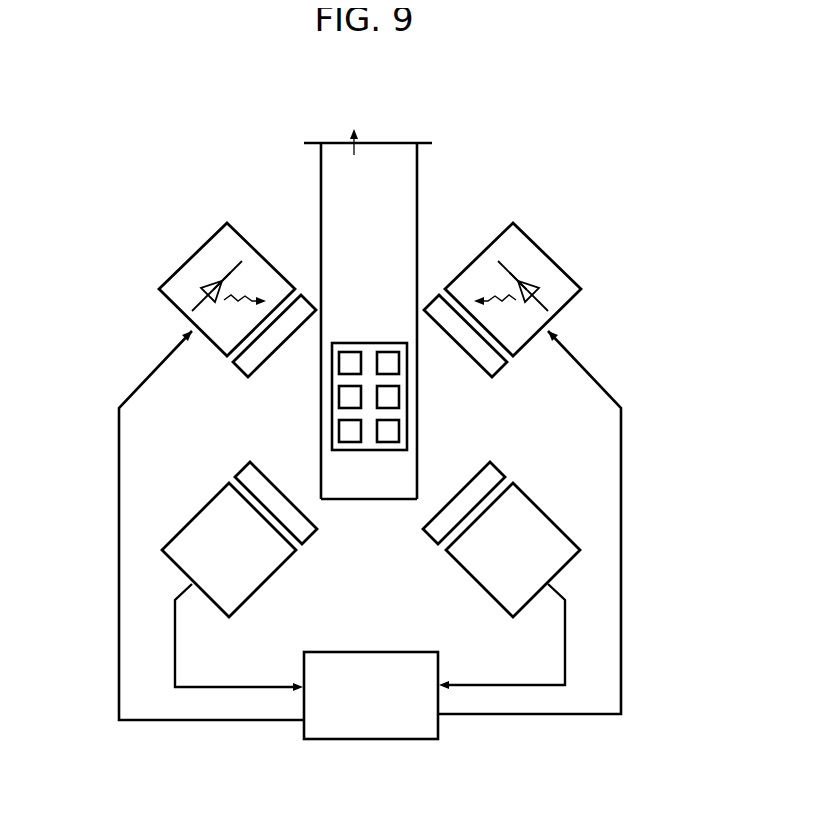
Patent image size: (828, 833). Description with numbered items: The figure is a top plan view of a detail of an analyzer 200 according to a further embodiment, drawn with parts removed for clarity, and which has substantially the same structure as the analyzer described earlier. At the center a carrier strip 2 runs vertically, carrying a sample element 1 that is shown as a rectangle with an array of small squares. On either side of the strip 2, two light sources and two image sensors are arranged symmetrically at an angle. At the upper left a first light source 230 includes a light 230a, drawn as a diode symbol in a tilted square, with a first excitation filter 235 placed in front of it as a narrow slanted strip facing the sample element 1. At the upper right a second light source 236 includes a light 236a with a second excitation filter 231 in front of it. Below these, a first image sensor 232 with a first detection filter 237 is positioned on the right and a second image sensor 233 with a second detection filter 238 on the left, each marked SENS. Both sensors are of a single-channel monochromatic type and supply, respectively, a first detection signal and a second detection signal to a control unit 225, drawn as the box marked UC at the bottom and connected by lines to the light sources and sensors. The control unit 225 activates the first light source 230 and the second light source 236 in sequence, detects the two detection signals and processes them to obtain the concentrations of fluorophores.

The electronic component / chip 1 is at (406, 404).
The carrier strip 2 is at (328, 153).
The analyzer 200 is at (644, 186).
The control unit 225 is at (372, 730).
The first light source 230 is at (130, 254).
The light 230a is at (212, 254).
The second excitation filter 231 is at (481, 362).
The first image sensor 232 is at (526, 513).
The second image sensor 233 is at (210, 511).
The first excitation filter 235 is at (305, 296).
The second light source 236 is at (580, 247).
The light 236a is at (519, 242).
The first detection filter 237 is at (494, 462).
The second detection filter 238 is at (268, 470).